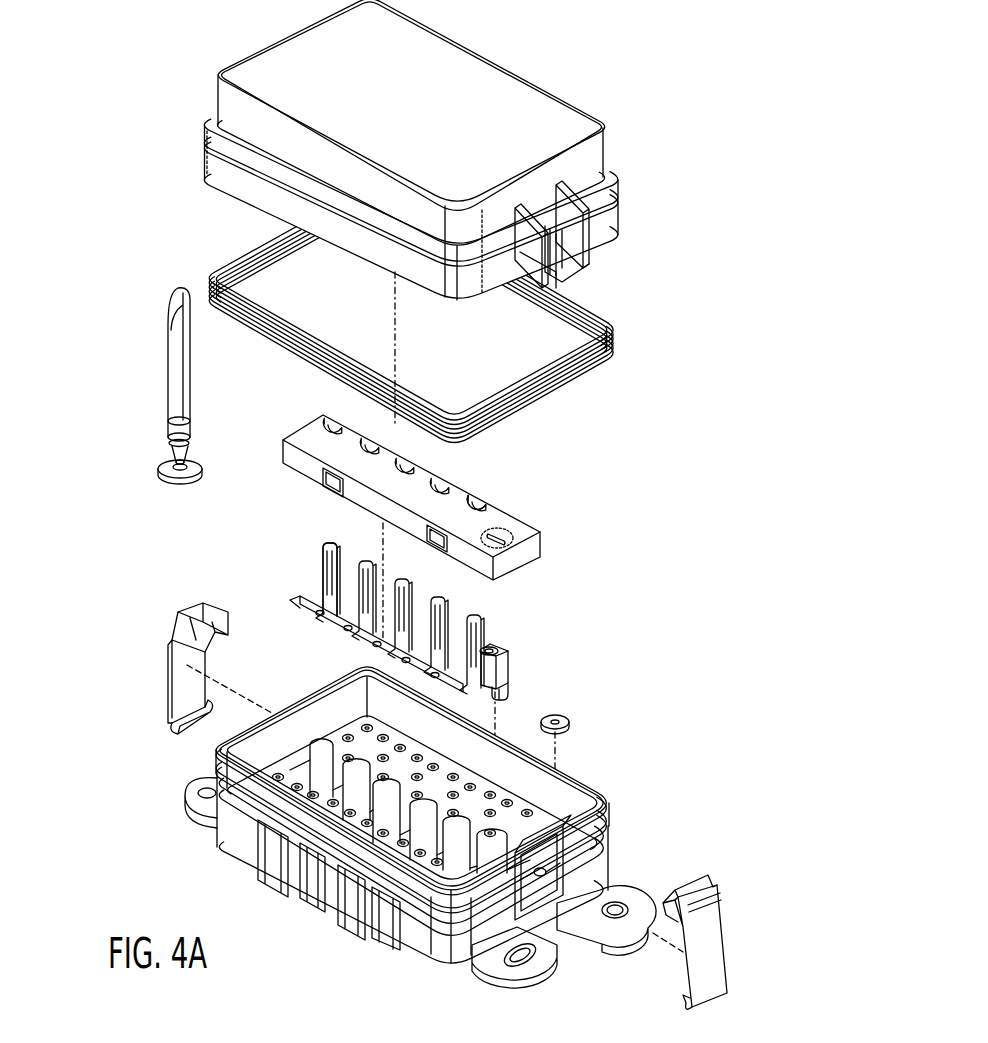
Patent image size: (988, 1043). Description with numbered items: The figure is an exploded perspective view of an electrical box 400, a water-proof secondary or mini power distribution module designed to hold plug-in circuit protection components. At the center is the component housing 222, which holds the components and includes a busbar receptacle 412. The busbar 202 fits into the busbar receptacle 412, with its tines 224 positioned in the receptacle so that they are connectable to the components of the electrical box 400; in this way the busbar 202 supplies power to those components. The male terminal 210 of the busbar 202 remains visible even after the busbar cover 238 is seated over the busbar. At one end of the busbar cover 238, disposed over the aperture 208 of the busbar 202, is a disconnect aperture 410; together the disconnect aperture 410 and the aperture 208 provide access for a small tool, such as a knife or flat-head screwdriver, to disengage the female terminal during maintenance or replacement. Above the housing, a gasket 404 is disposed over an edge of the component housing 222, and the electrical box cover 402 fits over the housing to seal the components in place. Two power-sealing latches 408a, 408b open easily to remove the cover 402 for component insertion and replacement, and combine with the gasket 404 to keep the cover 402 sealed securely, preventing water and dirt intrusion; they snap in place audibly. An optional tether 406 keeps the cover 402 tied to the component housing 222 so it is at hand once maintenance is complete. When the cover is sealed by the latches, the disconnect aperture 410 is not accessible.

The electrical box 400 is at (86, 78).
The electrical box cover 402 is at (567, 120).
The gasket 404 is at (606, 318).
The tether 406 is at (172, 390).
The power-sealing latch 408a is at (170, 680).
The power-sealing latch 408b is at (713, 935).
The disconnect aperture 410 is at (545, 527).
The busbar receptacle 412 is at (220, 795).
The busbar 202 is at (317, 603).
The aperture 208 is at (503, 648).
The male terminal 210 is at (508, 678).
The component housing 222 is at (578, 797).
The tines 224 is at (323, 567).
The busbar cover 238 is at (452, 517).